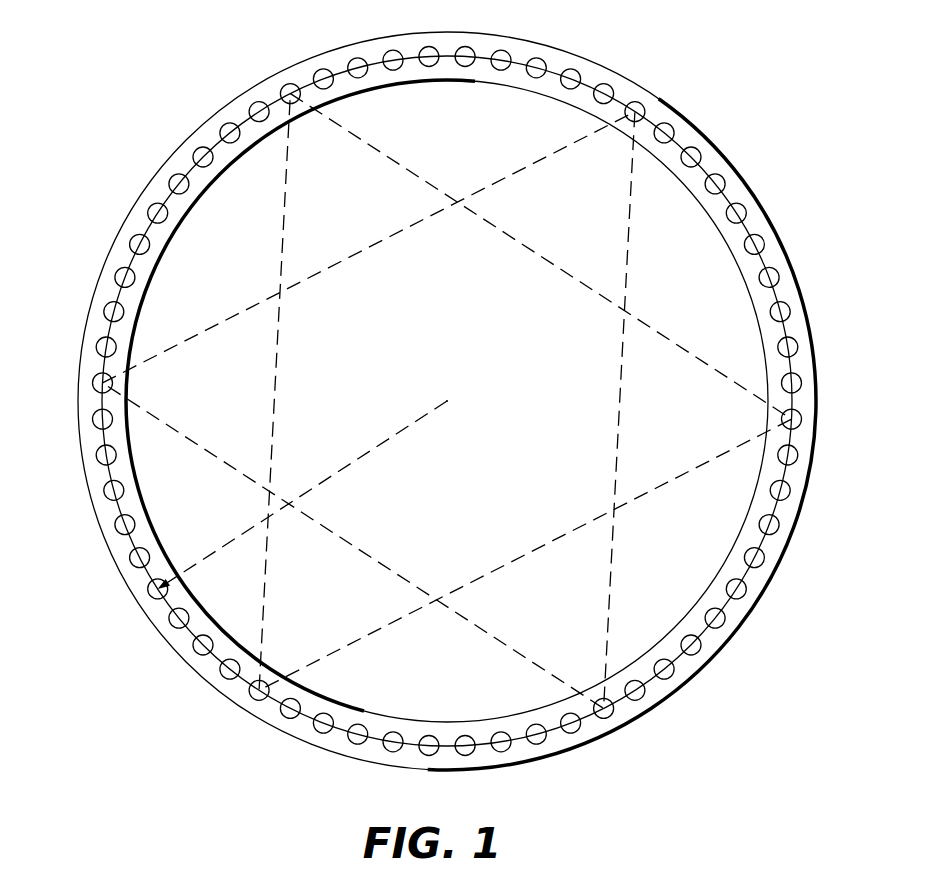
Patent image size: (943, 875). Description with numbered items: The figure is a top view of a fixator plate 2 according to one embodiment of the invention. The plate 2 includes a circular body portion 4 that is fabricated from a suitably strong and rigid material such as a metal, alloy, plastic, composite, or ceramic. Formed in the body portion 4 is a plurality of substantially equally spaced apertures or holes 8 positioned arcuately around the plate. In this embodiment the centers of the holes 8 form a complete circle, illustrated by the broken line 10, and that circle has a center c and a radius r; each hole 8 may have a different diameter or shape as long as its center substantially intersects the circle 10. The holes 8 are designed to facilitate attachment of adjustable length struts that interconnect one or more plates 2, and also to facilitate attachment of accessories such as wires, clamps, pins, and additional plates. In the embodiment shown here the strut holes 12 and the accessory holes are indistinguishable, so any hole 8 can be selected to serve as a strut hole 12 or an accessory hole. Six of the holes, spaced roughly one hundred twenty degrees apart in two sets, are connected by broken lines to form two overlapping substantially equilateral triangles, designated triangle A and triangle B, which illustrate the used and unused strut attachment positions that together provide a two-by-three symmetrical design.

The plate 2 is at (250, 735).
The circular body portion 4 is at (449, 765).
The holes 8 is at (104, 502).
The broken line 10 is at (294, 737).
The strut holes 12 is at (286, 89).
The triangle A is at (518, 548).
The triangle B is at (382, 248).
The center c is at (455, 399).
The radius r is at (302, 495).